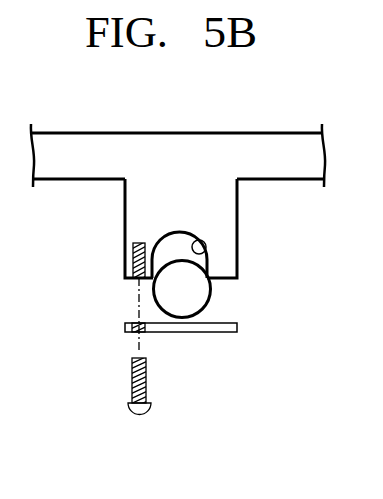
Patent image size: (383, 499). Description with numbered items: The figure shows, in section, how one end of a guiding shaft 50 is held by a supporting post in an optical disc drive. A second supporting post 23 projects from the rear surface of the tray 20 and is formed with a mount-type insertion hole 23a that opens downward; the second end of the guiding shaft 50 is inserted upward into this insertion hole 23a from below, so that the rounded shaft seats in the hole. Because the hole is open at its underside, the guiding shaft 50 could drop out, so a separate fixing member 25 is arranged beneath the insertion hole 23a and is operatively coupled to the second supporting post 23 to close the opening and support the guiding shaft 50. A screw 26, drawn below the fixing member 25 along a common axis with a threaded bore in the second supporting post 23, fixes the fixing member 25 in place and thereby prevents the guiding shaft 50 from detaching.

The tray 20 is at (78, 167).
The second supporting post 23 is at (237, 208).
The insertion hole 23a is at (203, 258).
The guiding shaft 50 is at (207, 292).
The fixing member 25 is at (217, 333).
The screw 26 is at (139, 415).